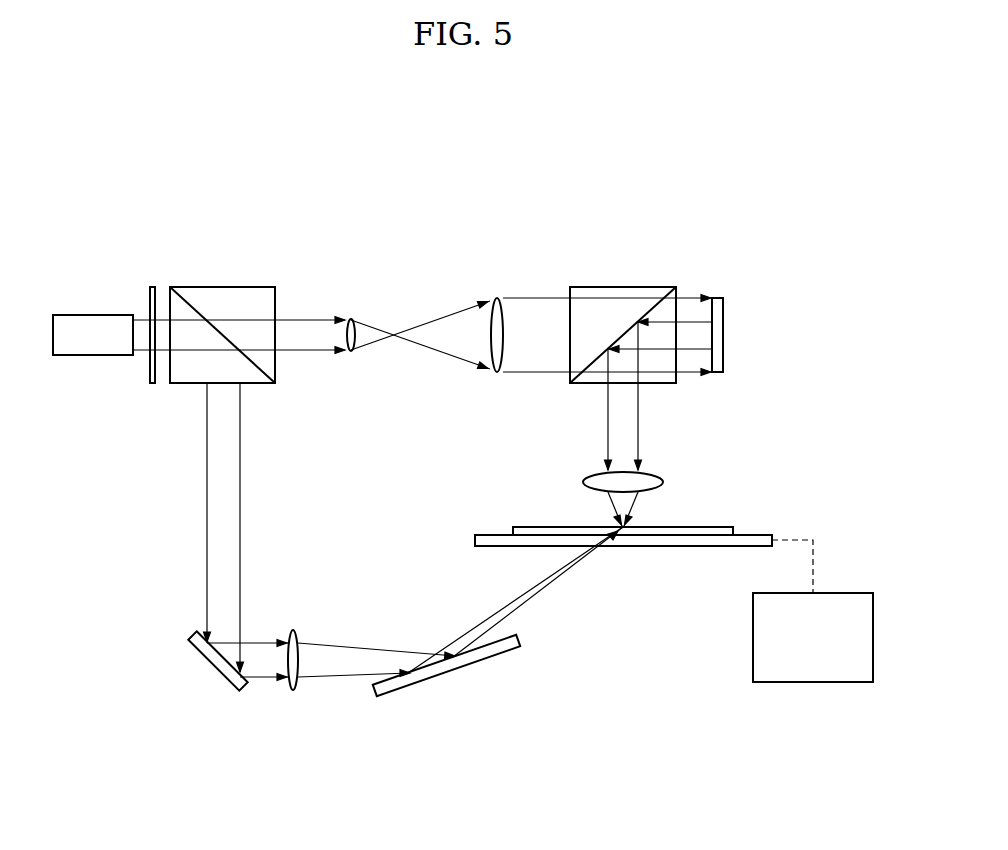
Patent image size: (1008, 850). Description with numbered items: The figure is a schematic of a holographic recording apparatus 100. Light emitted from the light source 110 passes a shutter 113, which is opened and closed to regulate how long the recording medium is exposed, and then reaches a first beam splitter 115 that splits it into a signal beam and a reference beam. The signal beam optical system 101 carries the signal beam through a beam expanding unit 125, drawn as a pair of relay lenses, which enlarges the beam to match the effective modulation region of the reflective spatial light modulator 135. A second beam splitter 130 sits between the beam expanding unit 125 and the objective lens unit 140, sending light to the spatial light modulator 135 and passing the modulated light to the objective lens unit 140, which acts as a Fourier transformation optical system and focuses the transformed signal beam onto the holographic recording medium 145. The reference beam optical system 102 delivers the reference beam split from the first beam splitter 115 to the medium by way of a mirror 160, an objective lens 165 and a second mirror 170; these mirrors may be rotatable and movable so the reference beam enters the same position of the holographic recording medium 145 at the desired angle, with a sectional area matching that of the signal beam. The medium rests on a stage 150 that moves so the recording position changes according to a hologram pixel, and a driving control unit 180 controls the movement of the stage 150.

The holographic recording apparatus 100 is at (772, 221).
The signal beam optical system 101 is at (797, 418).
The reference beam optical system 102 is at (587, 661).
The light source 110 is at (83, 315).
The shutter 113 is at (152, 287).
The first beam splitter 115 is at (223, 287).
The beam expanding unit 125 is at (343, 286).
The second beam splitter 130 is at (624, 287).
The spatial light modulator 135 is at (713, 298).
The objective lens unit 140 is at (650, 473).
The holographic recording medium 145 is at (722, 527).
The stage 150 is at (710, 548).
The mirror 160 is at (212, 670).
The objective lens 165 is at (293, 690).
The mirror 170 is at (488, 657).
The driving control unit 180 is at (813, 682).